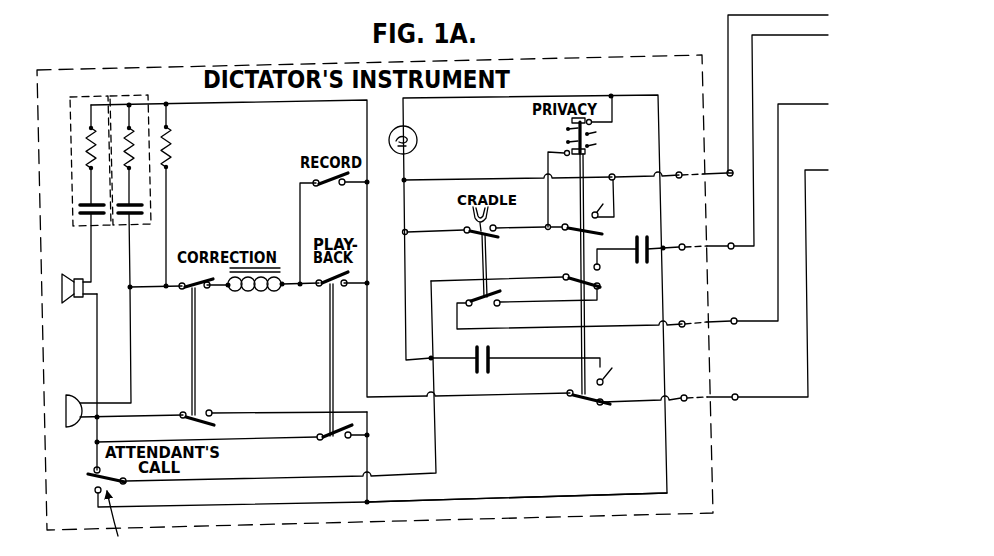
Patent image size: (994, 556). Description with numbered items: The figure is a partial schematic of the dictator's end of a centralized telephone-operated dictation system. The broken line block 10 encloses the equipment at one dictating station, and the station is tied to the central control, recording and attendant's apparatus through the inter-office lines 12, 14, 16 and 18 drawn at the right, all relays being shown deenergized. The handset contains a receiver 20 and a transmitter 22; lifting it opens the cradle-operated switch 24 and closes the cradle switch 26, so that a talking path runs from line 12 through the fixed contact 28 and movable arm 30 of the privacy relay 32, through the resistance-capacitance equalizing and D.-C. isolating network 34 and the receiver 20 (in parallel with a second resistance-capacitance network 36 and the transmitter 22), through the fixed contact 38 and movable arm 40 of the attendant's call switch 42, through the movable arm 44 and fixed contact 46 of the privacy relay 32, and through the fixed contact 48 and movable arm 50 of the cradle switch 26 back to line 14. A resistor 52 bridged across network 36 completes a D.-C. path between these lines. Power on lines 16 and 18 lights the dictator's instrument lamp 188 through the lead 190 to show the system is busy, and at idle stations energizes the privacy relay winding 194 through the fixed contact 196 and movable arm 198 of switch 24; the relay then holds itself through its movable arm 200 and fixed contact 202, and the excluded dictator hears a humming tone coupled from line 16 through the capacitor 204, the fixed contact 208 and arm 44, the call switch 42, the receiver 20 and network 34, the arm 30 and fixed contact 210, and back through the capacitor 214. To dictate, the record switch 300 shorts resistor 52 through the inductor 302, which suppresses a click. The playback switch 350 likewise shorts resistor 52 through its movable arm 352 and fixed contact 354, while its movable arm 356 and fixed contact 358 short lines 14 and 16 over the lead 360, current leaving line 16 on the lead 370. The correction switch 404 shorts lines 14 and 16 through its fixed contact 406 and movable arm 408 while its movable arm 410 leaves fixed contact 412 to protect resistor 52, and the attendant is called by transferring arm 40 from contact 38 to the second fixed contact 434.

The broken line block 10 is at (375, 278).
The inter-office line 12 is at (717, 414).
The inter-office line 14 is at (715, 335).
The inter-office line 16 is at (713, 263).
The inter-office line 18 is at (677, 187).
The receiver 20 is at (77, 266).
The transmitter 22 is at (119, 394).
The cradle-operated switch 24 is at (455, 242).
The cradle switch 26 is at (498, 309).
The fixed contact 28 is at (628, 418).
The movable arm 30 is at (574, 405).
The privacy relay 32 is at (557, 162).
The resistance-capacitance equalizing and D.-C. isolating network 34 is at (79, 177).
The second resistance-capacitance network 36 is at (125, 237).
The fixed contact 38 is at (91, 459).
The movable arm 40 is at (274, 393).
The attendant's call switch 42 is at (114, 523).
The movable arm 44 is at (515, 269).
The fixed contact 46 is at (567, 290).
The fixed contact 48 is at (514, 292).
The movable arm 50 is at (560, 304).
The resistor 52 is at (183, 196).
The dictator's instrument lamp 188 is at (422, 128).
The lead 190 is at (522, 282).
The privacy relay winding 194 is at (604, 141).
The fixed contact 196 is at (520, 217).
The movable arm 198 is at (438, 241).
The movable arm 200 is at (569, 243).
The fixed contact 202 is at (602, 199).
The capacitor 204 is at (650, 230).
The fixed contact 208 is at (616, 263).
The fixed contact 210 is at (619, 368).
The capacitor 214 is at (515, 351).
The record switch 300 is at (314, 220).
The inductor 302 is at (254, 302).
The playback switch 350 is at (321, 354).
The movable arm 352 is at (306, 297).
The fixed contact 354 is at (352, 298).
The movable arm 356 is at (210, 433).
The fixed contact 358 is at (339, 449).
The lead 360 is at (517, 485).
The lead 370 is at (778, 206).
The correction switch 404 is at (181, 352).
The fixed contact 406 is at (286, 395).
The movable arm 408 is at (169, 424).
The movable arm 410 is at (167, 299).
The fixed contact 412 is at (216, 298).
The second fixed contact 434 is at (211, 503).